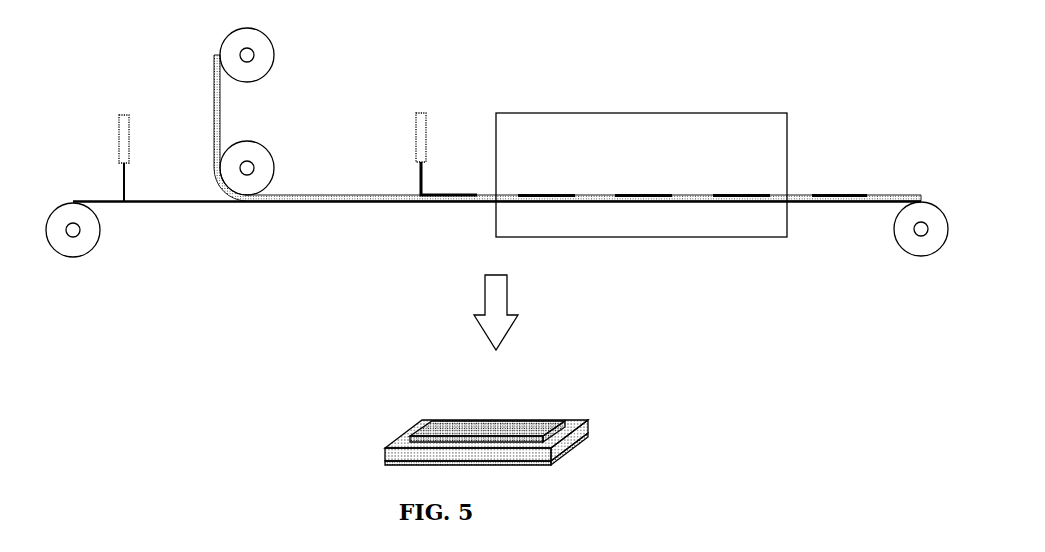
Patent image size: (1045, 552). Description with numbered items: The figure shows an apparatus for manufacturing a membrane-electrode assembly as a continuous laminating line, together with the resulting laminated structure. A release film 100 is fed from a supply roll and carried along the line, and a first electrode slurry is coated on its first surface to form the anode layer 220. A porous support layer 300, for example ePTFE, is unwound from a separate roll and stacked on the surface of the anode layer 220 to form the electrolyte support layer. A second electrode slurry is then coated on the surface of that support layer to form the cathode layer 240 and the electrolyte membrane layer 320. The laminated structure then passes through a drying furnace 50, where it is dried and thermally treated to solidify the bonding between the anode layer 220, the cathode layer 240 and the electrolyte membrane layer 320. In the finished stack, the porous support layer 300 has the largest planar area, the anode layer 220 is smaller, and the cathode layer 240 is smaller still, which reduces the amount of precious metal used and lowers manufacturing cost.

The drying furnace 50 is at (641, 136).
The release film 100 is at (497, 245).
The anode layer 220 is at (344, 298).
The cathode layer 240 is at (596, 277).
The porous support layer 300 is at (525, 114).
The electrolyte membrane layer 320 is at (519, 419).